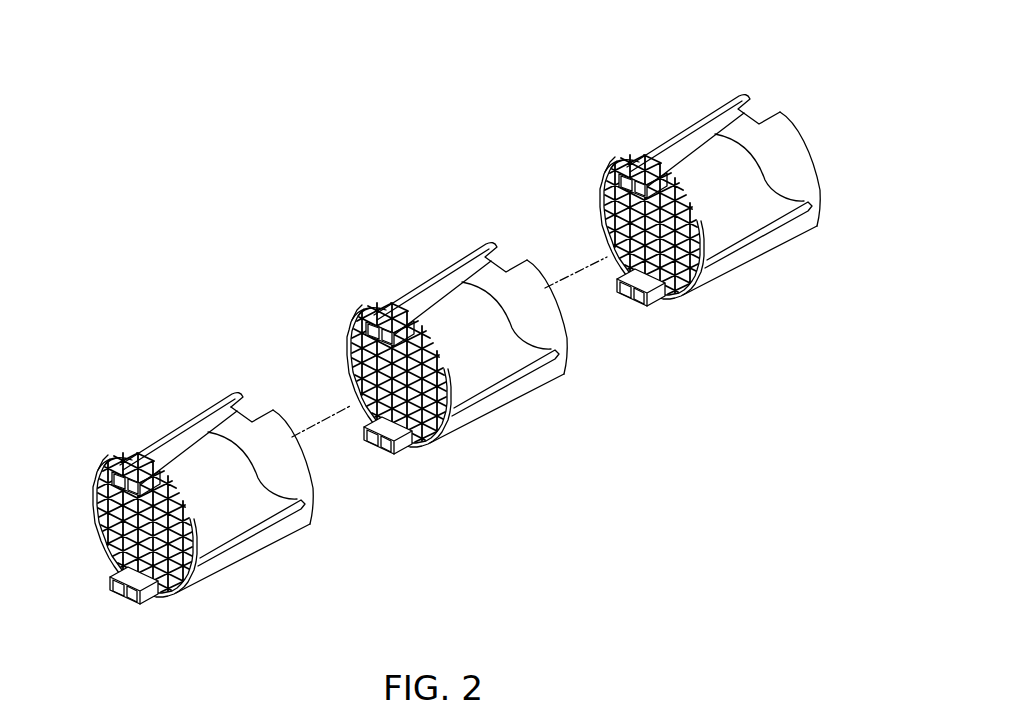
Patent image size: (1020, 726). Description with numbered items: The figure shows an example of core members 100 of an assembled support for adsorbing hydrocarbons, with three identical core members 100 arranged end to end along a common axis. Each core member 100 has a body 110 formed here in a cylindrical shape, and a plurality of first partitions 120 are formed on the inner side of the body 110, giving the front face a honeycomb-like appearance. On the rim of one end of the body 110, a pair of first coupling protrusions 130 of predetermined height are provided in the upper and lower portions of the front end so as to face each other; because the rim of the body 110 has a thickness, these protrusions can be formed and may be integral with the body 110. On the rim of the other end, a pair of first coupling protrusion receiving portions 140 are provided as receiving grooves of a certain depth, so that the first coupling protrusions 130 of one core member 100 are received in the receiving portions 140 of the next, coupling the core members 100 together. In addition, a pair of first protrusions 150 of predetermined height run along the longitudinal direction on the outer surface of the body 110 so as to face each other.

The core member 100 is at (433, 314).
The body 110 is at (255, 540).
The first partitions 120 is at (95, 483).
The first coupling protrusions 130 is at (109, 582).
The first coupling protrusion receiving portions 140 is at (256, 404).
The first protrusions 150 is at (309, 523).